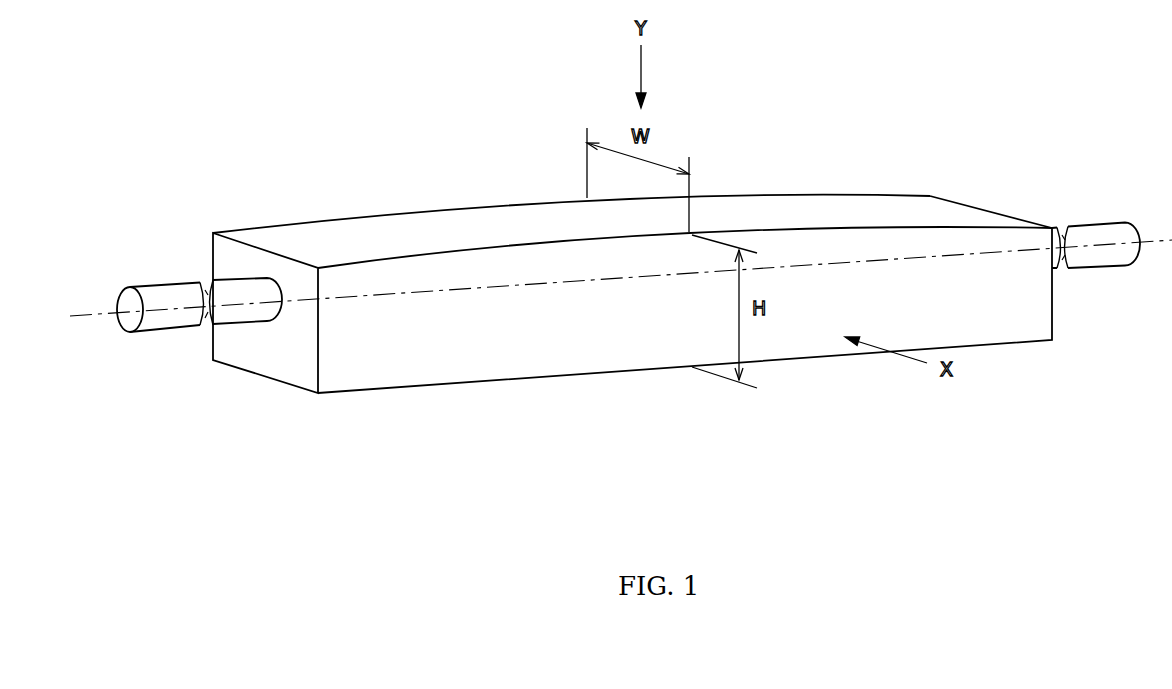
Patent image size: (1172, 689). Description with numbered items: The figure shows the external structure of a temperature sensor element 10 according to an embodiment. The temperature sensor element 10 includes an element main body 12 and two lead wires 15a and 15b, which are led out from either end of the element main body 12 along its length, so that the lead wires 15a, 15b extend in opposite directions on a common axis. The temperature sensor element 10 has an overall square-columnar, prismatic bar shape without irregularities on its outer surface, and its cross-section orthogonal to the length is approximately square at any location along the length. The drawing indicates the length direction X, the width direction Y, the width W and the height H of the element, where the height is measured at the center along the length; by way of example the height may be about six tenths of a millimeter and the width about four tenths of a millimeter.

The temperature sensor element 10 is at (768, 167).
The element main body 12 is at (500, 222).
The lead wire 15a is at (1104, 232).
The lead wire 15b is at (184, 293).